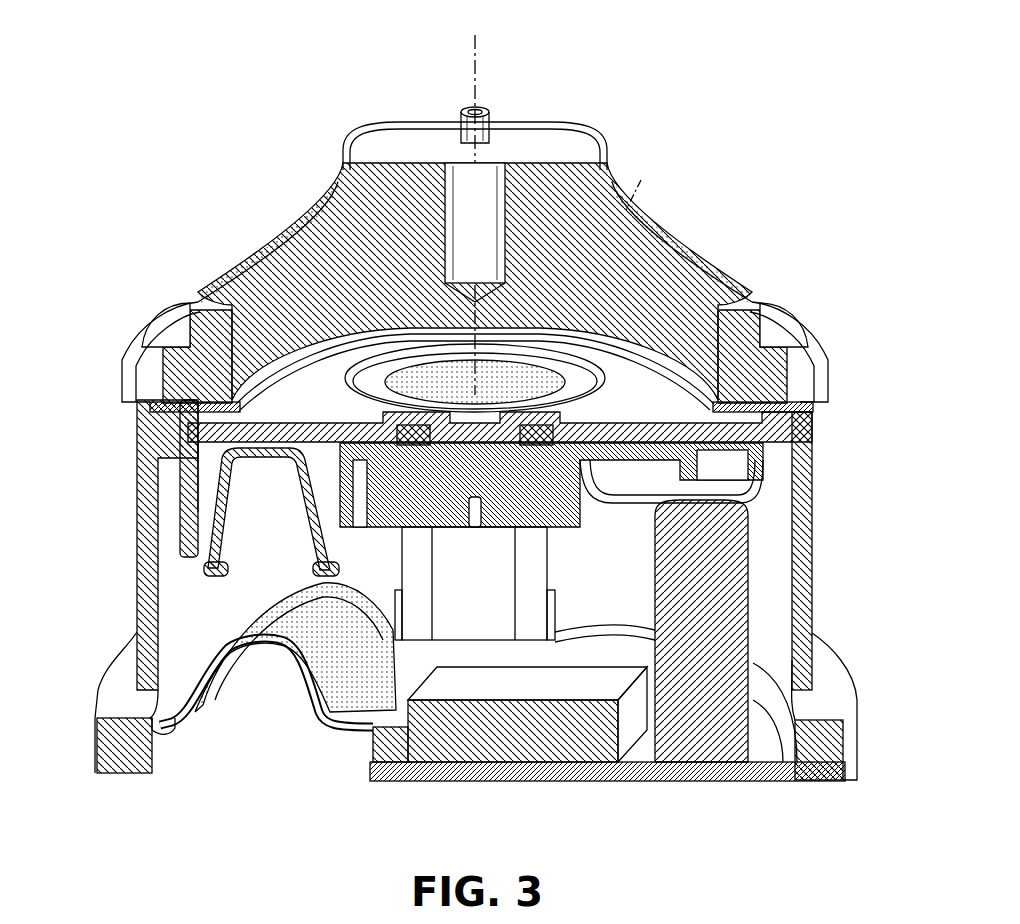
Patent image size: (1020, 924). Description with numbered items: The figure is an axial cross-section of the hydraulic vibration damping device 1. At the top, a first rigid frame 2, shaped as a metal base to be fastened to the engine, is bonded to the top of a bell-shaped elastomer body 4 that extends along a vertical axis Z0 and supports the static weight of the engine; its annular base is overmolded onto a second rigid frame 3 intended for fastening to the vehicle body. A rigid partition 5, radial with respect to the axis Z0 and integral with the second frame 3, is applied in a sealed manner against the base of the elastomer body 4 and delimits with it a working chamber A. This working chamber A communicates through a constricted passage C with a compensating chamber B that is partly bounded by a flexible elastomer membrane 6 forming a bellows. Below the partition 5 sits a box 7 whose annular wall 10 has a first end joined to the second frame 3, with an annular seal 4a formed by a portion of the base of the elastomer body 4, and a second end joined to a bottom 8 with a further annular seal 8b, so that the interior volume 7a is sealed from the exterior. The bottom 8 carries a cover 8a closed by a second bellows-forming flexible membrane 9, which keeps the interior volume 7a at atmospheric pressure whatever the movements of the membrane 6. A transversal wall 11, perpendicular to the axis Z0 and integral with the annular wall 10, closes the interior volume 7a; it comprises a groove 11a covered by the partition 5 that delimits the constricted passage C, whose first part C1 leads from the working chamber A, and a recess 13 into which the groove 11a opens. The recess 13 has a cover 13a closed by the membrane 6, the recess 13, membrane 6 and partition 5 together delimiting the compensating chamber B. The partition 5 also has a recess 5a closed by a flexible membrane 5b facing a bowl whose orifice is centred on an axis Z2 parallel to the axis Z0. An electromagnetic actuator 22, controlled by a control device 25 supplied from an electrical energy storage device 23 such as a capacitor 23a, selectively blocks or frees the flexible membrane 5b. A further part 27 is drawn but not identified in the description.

The hydraulic vibration damping device 1 is at (636, 116).
The first rigid frame 2 is at (530, 152).
The second rigid frame 3 is at (747, 335).
The elastomer body 4 is at (660, 390).
The annular seal 4a is at (795, 410).
The partition 5 is at (708, 318).
The recess 5a is at (398, 378).
The flexible membrane 5b is at (440, 385).
The flexible membrane 6 is at (213, 508).
The box 7 is at (822, 592).
The interior volume 7a is at (193, 612).
The bottom 8 is at (717, 770).
The cover 8a is at (172, 734).
The annular seal 8b is at (118, 768).
The flexible membrane 9 is at (213, 703).
The annular wall 10 is at (800, 547).
The transversal wall 11 is at (765, 447).
The groove 11a is at (760, 490).
The recess 13 is at (205, 552).
The cover 13a is at (203, 577).
The electromagnetic actuator 22 is at (460, 625).
The device for storing electrical energy 23 is at (764, 590).
The capacitor 23a is at (683, 683).
The control device 25 is at (482, 738).
The annular cavity 27 is at (755, 695).
The axis Z0 is at (478, 57).
The axis Z2 is at (645, 179).
The first part of the constricted passage C1 is at (482, 360).
The working chamber A is at (315, 402).
The compensating chamber B is at (218, 469).
The constricted passage C is at (713, 463).